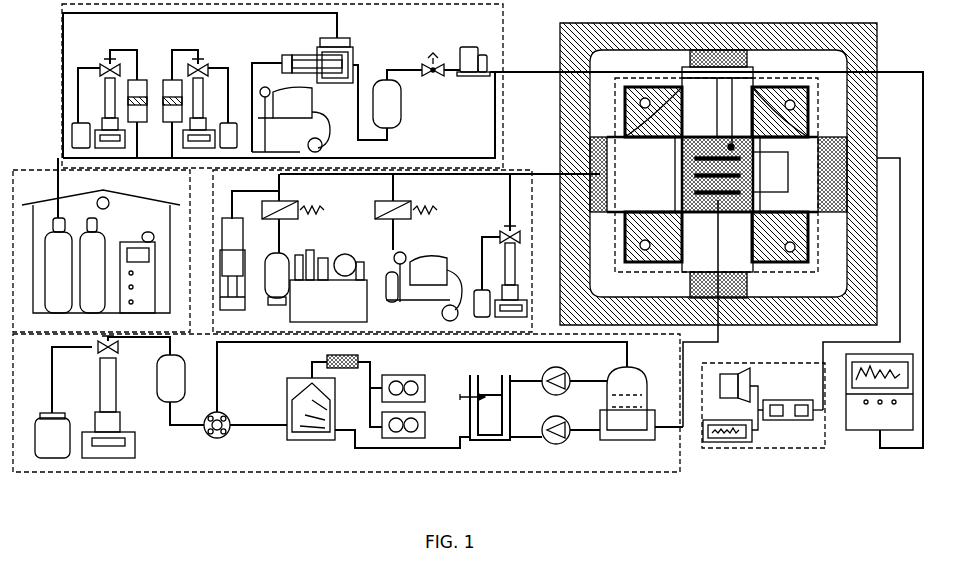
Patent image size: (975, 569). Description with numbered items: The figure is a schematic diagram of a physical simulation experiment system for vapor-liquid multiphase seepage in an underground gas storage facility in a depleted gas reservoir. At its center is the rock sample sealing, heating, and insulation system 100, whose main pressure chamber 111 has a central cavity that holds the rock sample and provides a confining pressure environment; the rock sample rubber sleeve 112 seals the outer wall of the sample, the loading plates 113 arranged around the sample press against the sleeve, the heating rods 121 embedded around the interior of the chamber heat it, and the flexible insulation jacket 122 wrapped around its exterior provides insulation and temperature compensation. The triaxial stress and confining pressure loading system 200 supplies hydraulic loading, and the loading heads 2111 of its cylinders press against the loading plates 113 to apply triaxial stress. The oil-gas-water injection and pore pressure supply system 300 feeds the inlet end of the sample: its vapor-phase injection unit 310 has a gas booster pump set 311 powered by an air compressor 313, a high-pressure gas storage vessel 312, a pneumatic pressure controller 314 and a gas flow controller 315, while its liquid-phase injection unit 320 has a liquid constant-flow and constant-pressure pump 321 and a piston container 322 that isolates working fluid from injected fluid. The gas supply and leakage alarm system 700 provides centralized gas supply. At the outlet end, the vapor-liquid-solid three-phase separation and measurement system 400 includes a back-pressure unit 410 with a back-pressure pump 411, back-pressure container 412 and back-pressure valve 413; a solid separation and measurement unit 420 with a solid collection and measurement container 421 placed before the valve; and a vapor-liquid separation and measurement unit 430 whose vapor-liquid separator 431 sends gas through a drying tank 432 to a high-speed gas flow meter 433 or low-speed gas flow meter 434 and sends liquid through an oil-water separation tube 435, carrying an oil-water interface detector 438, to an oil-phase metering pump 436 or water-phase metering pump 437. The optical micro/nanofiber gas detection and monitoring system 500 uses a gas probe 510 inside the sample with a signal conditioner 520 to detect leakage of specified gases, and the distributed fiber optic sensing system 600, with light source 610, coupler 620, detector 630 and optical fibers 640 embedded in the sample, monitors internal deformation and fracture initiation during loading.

The rock sample sealing, heating, and insulation system 100 is at (878, 47).
The main pressure chamber 111 is at (770, 85).
The rock sample rubber sleeve 112 is at (825, 120).
The loading plates 113 is at (733, 68).
The heating rods 121 is at (677, 57).
The flexible insulation jacket 122 is at (637, 88).
The loading heads 2111 is at (825, 145).
The gas probe 510 is at (805, 70).
The optical fibers 640 is at (858, 150).
The triaxial stress and confining pressure loading system 200 is at (512, 165).
The oil-gas-water injection and pore pressure supply system 300 is at (503, 44).
The vapor-phase injection unit 310 is at (308, 46).
The gas booster pump set 311 is at (345, 48).
The high-pressure gas storage vessel 312 is at (403, 102).
The air compressor 313 is at (278, 87).
The pneumatic pressure controller 314 is at (430, 61).
The gas flow controller 315 is at (473, 78).
The liquid-phase injection unit 320 is at (107, 63).
The liquid constant-flow and constant-pressure pump 321 is at (134, 50).
The piston container 322 is at (166, 80).
The vapor-liquid-solid three-phase separation and measurement system 400 is at (680, 452).
The back-pressure unit 410 is at (178, 417).
The back-pressure pump 411 is at (138, 448).
The back-pressure container 412 is at (157, 368).
The back-pressure valve 413 is at (227, 440).
The solid separation and measurement unit 420 is at (630, 365).
The solid collection and measurement container 421 is at (630, 442).
The vapor-liquid separation and measurement unit 430 is at (497, 464).
The vapor-liquid separator 431 is at (287, 398).
The drying tank 432 is at (360, 358).
The high-speed gas flow meter 433 is at (427, 393).
The low-speed gas flow meter 434 is at (427, 434).
The oil-water separation tube 435 is at (471, 396).
The oil-water interface detector 438 is at (490, 396).
The oil-phase metering pump 436 is at (572, 378).
The water-phase metering pump 437 is at (570, 440).
The optical micro/nanofiber gas detection and monitoring system 500 is at (865, 432).
The signal conditioner 520 is at (903, 433).
The distributed fiber optic sensing system 600 is at (740, 362).
The light source 610 is at (742, 376).
The coupler 620 is at (772, 403).
The detector 630 is at (752, 437).
The gas supply and leakage alarm system 700 is at (42, 168).